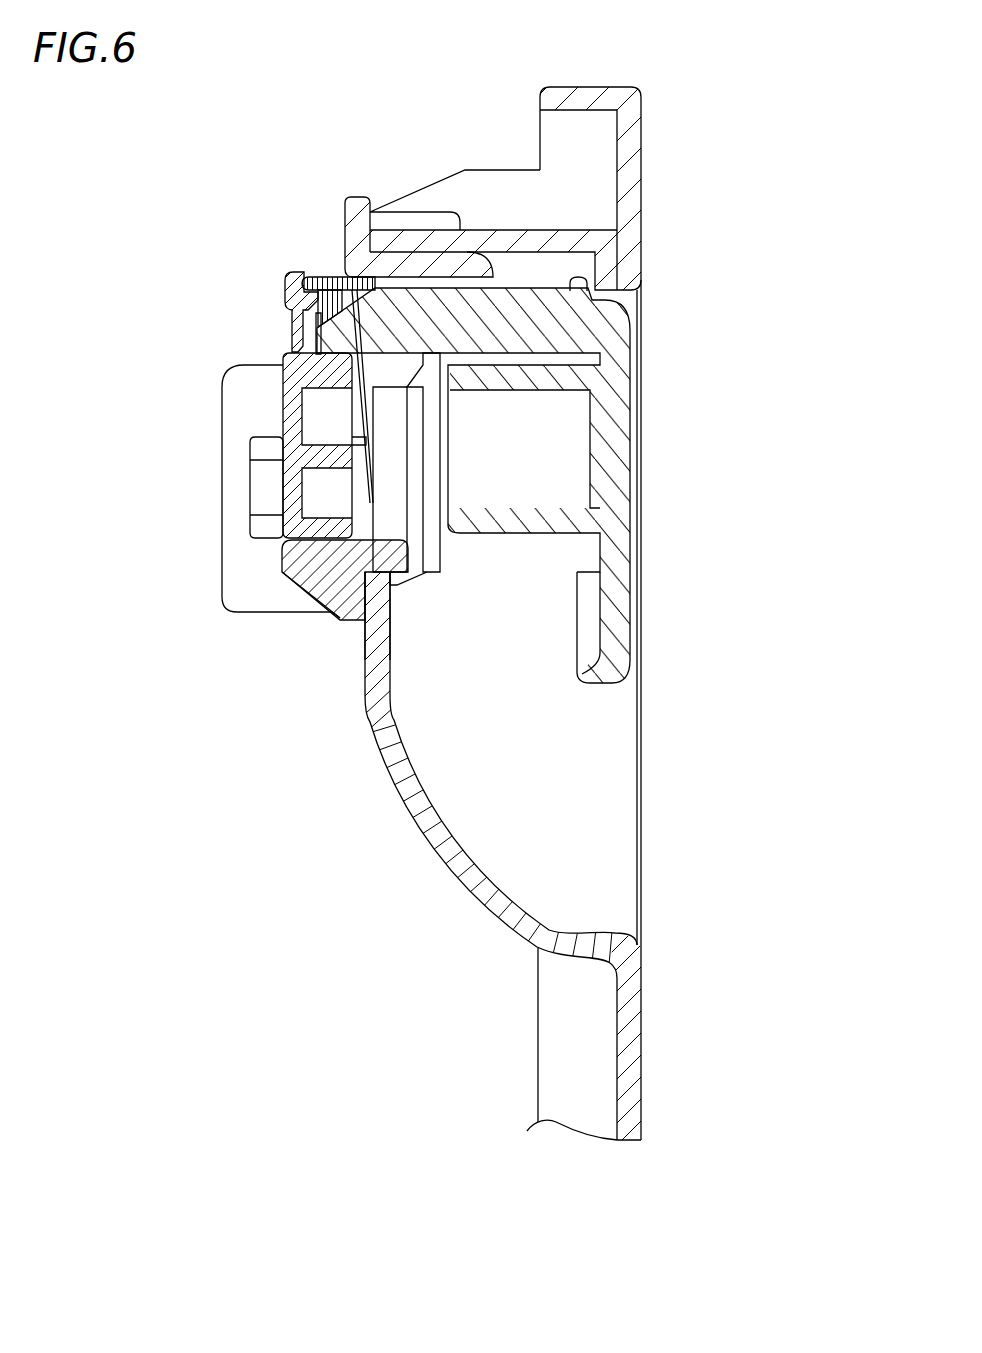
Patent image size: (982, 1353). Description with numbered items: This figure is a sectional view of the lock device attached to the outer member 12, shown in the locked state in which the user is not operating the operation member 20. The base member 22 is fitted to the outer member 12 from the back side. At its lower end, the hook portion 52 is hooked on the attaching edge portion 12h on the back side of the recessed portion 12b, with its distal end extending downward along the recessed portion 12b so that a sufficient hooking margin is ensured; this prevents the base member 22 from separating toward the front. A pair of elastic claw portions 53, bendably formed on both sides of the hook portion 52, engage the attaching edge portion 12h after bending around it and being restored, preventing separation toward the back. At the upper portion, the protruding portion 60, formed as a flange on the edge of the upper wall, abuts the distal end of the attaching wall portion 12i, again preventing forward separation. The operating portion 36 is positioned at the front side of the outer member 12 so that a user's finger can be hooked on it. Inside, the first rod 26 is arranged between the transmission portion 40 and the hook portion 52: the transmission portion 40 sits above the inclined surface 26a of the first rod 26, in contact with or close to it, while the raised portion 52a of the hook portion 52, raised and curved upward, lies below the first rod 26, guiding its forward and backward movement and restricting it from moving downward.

The outer member 12 is at (608, 93).
The attaching wall portion 12i is at (452, 227).
The attaching edge portion 12h is at (367, 630).
The recessed portion 12b is at (432, 852).
The operation member 20 is at (634, 553).
The base member 22 is at (283, 576).
The first rod 26 is at (298, 384).
The inclined surface 26a is at (300, 327).
The operating portion 36 is at (602, 678).
The transmission portion 40 is at (360, 313).
The hook portion 52 is at (343, 597).
The raised portion 52a is at (325, 543).
The elastic claw portion 53 is at (400, 583).
The protruding portion 60 is at (358, 200).